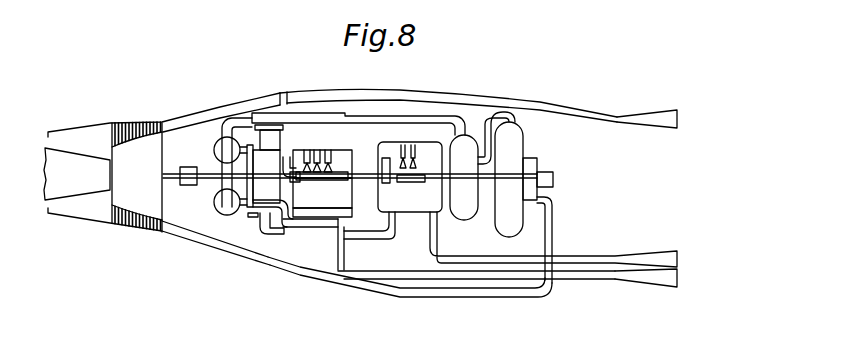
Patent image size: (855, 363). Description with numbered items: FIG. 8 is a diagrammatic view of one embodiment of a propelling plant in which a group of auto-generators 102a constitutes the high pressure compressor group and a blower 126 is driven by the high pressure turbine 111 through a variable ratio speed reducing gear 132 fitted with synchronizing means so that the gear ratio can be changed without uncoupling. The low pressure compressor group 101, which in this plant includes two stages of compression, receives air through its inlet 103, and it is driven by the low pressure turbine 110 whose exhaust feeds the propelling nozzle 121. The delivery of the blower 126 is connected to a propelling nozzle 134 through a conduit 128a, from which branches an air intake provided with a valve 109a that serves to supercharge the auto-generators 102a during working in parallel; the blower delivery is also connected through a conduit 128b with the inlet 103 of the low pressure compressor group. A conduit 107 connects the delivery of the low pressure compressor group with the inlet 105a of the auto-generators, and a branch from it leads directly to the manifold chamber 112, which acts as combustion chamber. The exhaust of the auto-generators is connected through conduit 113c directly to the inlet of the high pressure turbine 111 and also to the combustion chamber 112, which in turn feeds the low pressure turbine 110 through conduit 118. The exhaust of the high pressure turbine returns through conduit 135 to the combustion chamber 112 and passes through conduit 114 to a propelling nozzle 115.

The low pressure compressor group 101 is at (496, 215).
The auto-generators 102a is at (222, 214).
The inlet of the low pressure compressor group 103 is at (553, 196).
The inlet of auto-generators 105a is at (215, 160).
The conduit 107 is at (312, 117).
The valve 109a is at (222, 128).
The low pressure gas turbine group 110 is at (408, 204).
The high pressure gas turbine group 111 is at (336, 189).
The manifold chamber 112 is at (252, 135).
The conduit 113c is at (277, 151).
The conduit 114 is at (563, 280).
The propelling nozzle 115 is at (643, 281).
The conduit 118 is at (365, 240).
The propelling nozzle 121 is at (618, 257).
The blower 126 is at (127, 231).
The conduit 128a is at (380, 93).
The conduit 128b is at (513, 297).
The variable ratio speed reducing gear 132 is at (187, 184).
The propelling nozzle 134 is at (627, 115).
The conduit 135 is at (313, 222).